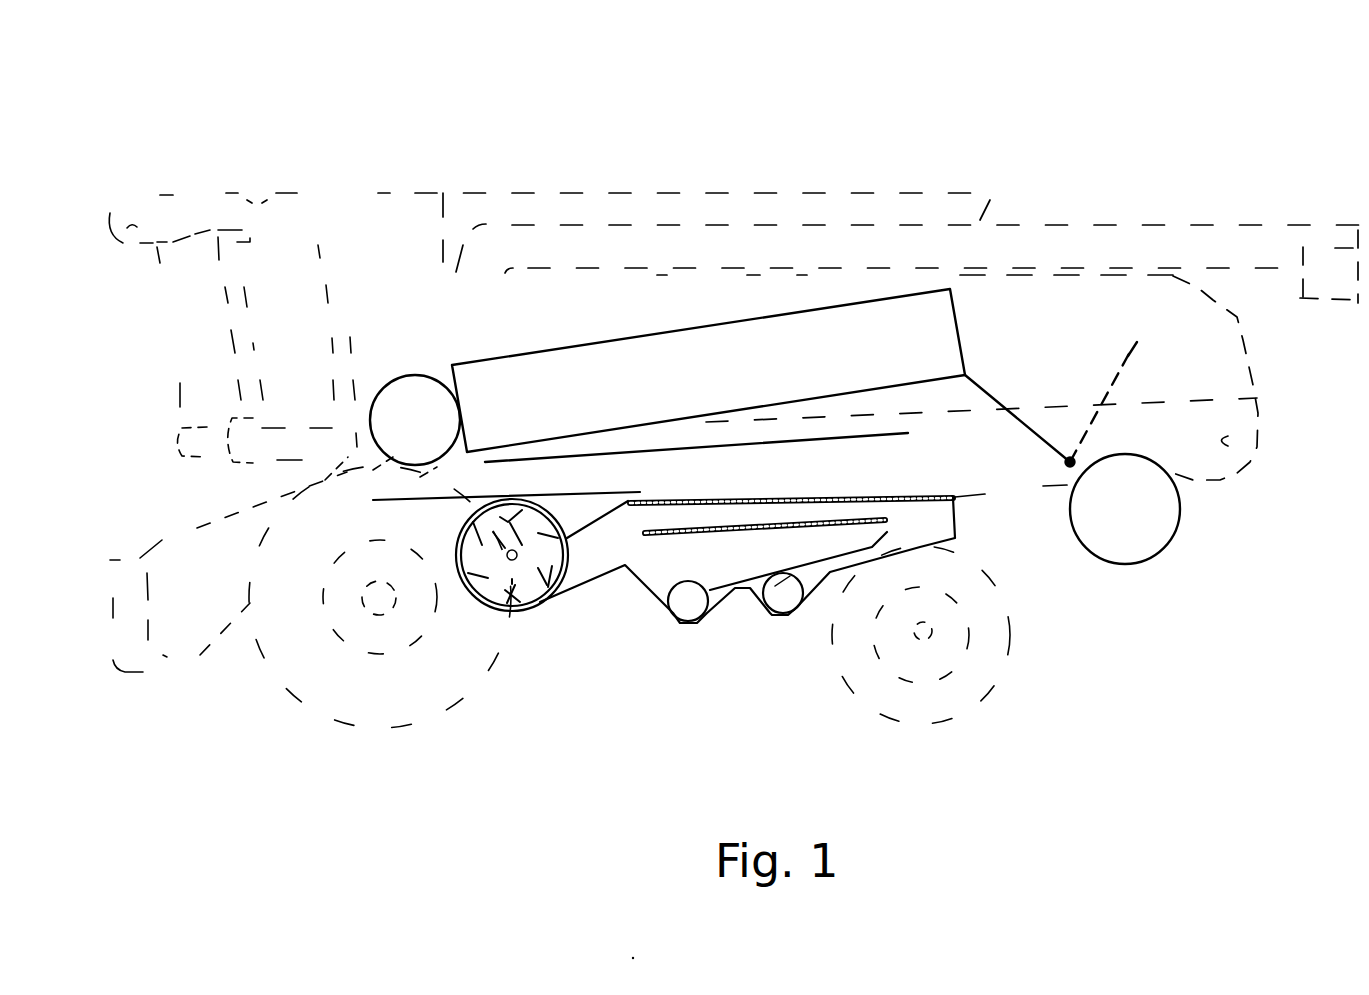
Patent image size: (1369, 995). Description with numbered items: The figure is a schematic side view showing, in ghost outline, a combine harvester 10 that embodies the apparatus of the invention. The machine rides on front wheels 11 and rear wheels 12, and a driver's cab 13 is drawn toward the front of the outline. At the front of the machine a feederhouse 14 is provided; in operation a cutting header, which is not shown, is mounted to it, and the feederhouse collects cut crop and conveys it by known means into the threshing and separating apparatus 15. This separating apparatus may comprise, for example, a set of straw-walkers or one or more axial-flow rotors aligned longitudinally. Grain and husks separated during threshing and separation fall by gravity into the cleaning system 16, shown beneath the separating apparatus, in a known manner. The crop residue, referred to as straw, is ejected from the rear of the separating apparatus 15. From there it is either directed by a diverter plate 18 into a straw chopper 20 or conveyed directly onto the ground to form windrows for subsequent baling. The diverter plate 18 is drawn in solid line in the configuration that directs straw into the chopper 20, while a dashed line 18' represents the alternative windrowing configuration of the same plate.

The combine harvester 10 is at (245, 111).
The front wheels 11 is at (278, 672).
The rear wheels 12 is at (852, 692).
The driver's cab 13 is at (287, 193).
The feederhouse 14 is at (141, 558).
The threshing and separating apparatus 15 is at (550, 360).
The cleaning system 16 is at (603, 617).
The diverter plate 18 is at (1020, 421).
The diverter plate windrowing configuration 18' is at (1103, 385).
The straw chopper 20 is at (1168, 551).